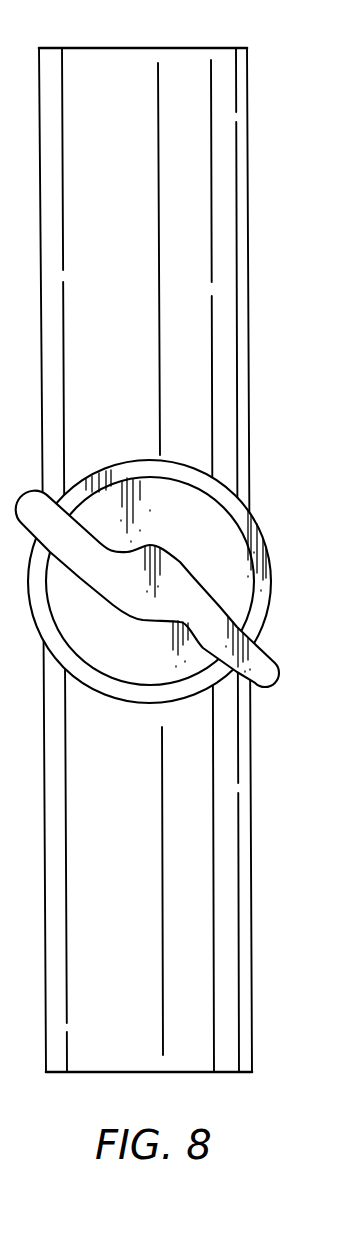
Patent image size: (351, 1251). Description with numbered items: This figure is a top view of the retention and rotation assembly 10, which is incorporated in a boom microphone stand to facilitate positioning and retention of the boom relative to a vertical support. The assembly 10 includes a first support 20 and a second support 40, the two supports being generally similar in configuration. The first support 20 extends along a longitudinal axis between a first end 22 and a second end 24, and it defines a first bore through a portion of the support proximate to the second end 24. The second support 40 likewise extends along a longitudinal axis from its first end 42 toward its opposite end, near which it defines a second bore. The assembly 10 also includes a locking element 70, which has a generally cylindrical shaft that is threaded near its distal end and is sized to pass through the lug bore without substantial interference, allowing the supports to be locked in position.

The retention and rotation assembly 10 is at (170, 560).
The first support 20 is at (169, 830).
The first end 22 is at (193, 1073).
The second end 24 is at (145, 461).
The second support 40 is at (168, 270).
The first end 42 is at (140, 47).
The locking element 70 is at (160, 588).